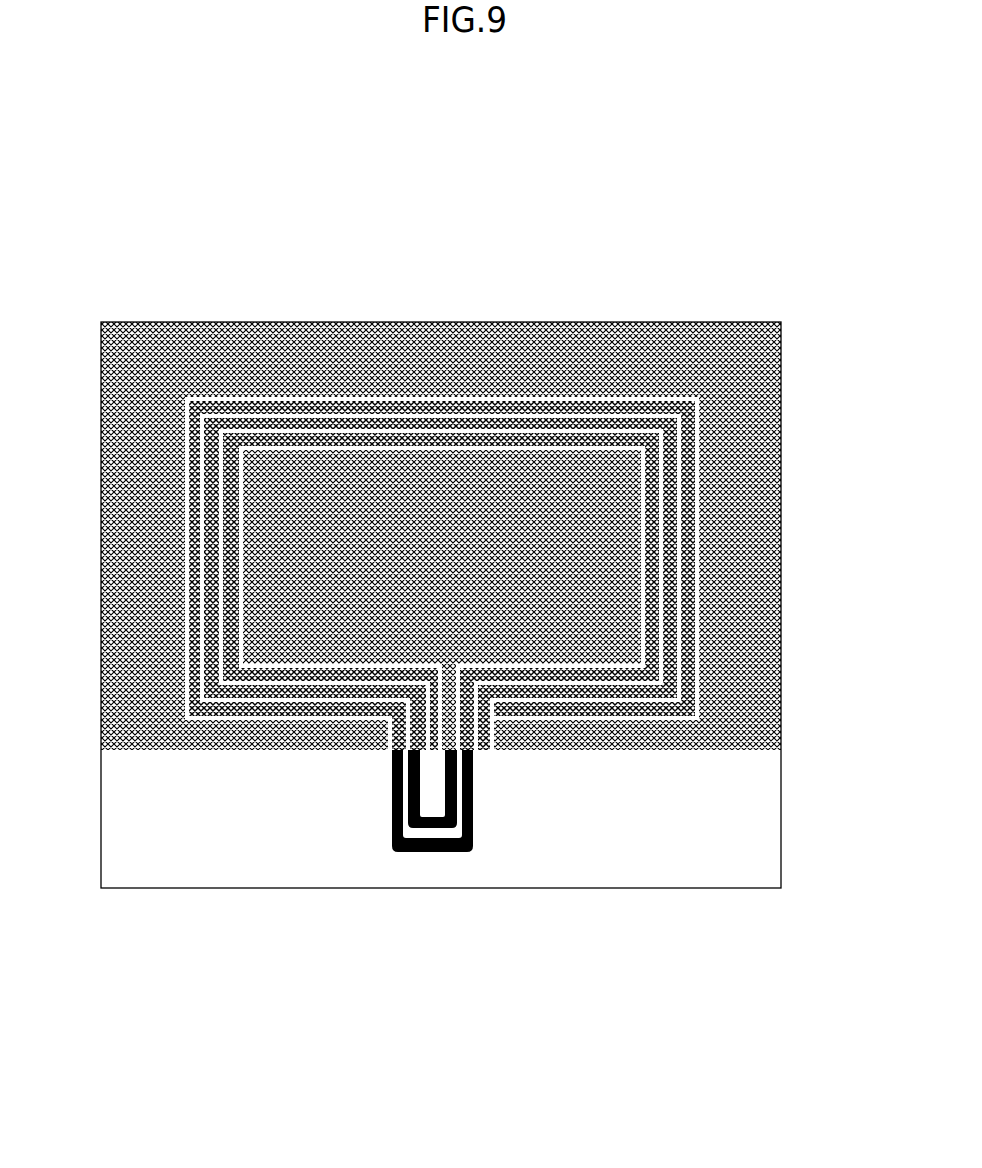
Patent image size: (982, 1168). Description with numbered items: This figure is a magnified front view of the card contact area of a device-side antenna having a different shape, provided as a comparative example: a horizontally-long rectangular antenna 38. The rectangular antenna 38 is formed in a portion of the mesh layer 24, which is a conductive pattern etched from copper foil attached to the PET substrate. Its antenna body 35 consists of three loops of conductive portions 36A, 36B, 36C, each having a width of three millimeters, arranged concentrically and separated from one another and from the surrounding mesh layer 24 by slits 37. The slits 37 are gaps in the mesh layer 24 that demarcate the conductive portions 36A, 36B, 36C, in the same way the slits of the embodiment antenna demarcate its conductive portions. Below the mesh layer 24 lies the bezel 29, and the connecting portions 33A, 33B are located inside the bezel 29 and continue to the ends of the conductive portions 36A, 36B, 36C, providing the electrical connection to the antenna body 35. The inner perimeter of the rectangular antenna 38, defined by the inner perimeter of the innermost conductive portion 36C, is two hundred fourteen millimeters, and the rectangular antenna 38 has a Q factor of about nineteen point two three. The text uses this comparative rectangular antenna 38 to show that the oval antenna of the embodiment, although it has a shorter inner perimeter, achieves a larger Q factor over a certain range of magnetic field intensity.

The mesh layer 24 is at (705, 353).
The bezel 29 is at (755, 808).
The antenna body 35 is at (442, 460).
The conductive portion 36A is at (312, 405).
The conductive portion 36B is at (377, 422).
The conductive portion 36C is at (425, 438).
The slits 37 is at (543, 453).
The connecting portion 33A is at (393, 777).
The connecting portion 33B is at (390, 813).
The rectangular antenna 38 is at (508, 813).